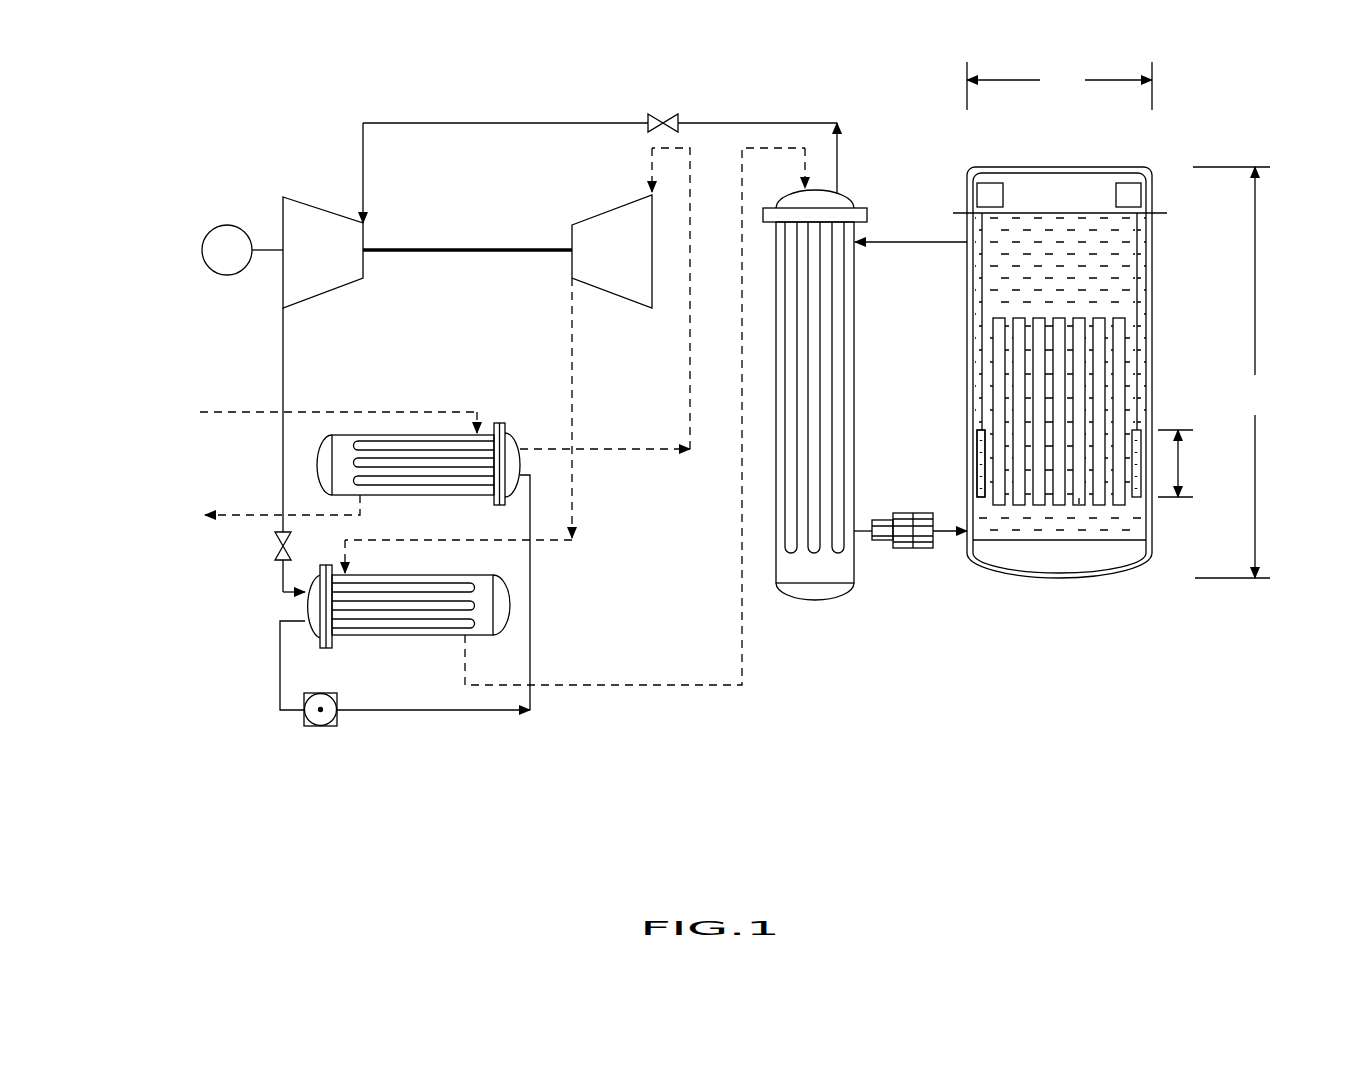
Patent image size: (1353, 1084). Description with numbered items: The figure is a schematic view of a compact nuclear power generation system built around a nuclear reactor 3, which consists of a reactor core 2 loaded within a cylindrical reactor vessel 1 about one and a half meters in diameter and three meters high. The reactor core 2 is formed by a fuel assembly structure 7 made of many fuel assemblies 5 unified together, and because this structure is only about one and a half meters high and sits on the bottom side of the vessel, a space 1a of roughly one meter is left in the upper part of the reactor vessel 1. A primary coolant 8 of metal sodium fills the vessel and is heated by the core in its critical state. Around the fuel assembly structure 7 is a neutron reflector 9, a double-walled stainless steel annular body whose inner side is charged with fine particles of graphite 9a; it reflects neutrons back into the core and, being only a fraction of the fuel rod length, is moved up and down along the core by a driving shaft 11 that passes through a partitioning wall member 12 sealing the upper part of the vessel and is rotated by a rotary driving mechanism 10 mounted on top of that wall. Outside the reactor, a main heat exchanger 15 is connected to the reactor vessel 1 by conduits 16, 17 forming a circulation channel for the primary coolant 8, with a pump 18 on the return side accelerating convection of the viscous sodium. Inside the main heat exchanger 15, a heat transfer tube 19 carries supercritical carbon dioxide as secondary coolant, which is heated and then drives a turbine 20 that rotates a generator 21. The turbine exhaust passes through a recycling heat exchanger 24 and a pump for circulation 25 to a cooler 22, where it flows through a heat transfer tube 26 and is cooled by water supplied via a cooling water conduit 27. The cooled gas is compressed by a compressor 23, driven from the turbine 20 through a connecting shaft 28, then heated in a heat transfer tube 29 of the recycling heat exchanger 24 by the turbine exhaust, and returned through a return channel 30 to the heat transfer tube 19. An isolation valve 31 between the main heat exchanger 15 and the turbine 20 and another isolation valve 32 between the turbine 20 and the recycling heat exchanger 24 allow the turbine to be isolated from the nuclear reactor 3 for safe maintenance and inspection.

The reactor vessel 1 is at (1154, 288).
The space 1a is at (1148, 244).
The reactor core 2 is at (1080, 497).
The nuclear reactor 3 is at (1087, 364).
The fuel assembly 5 is at (998, 356).
The fuel assembly structure 7 is at (1061, 411).
The primary coolant 8 is at (1002, 286).
The neutron reflector 9 is at (980, 490).
The fine particles of graphite 9a is at (985, 450).
The rotary driving mechanism 10 is at (990, 196).
The driving shaft 11 is at (982, 275).
The partitioning wall member 12 is at (1017, 212).
The main heat exchanger 15 is at (786, 602).
The conduit 16 is at (882, 240).
The conduit 17 is at (864, 534).
The pump 18 is at (914, 550).
The heat transfer tube 19 is at (840, 456).
The turbine 20 is at (298, 196).
The generator 21 is at (207, 266).
The cooler 22 is at (516, 432).
The compressor 23 is at (626, 285).
The recycling heat exchanger 24 is at (378, 636).
The pump for circulation 25 is at (318, 728).
The heat transfer tube 26 is at (362, 474).
The cooling water conduit 27 is at (224, 412).
The connecting shaft 28 is at (462, 256).
The heat transfer tube 29 is at (416, 588).
The return channel 30 is at (660, 685).
The isolation valve 31 is at (654, 118).
The isolation valve 32 is at (268, 554).